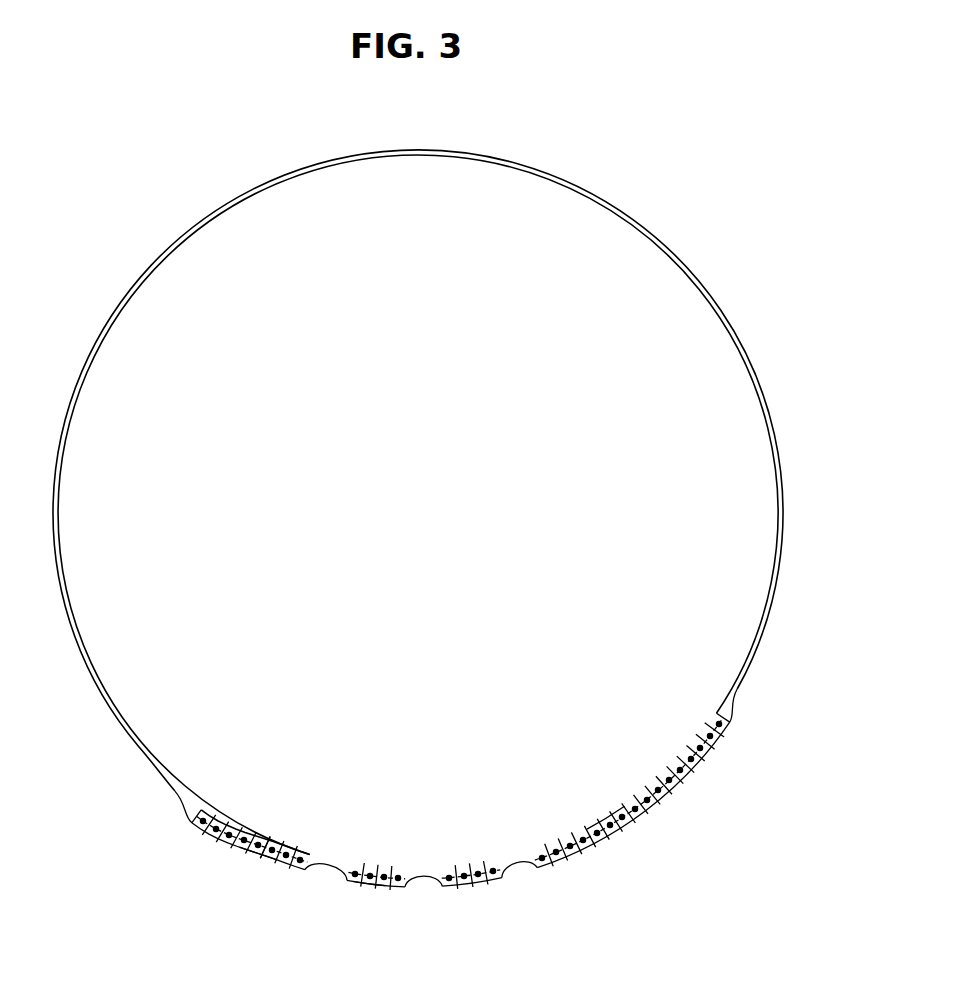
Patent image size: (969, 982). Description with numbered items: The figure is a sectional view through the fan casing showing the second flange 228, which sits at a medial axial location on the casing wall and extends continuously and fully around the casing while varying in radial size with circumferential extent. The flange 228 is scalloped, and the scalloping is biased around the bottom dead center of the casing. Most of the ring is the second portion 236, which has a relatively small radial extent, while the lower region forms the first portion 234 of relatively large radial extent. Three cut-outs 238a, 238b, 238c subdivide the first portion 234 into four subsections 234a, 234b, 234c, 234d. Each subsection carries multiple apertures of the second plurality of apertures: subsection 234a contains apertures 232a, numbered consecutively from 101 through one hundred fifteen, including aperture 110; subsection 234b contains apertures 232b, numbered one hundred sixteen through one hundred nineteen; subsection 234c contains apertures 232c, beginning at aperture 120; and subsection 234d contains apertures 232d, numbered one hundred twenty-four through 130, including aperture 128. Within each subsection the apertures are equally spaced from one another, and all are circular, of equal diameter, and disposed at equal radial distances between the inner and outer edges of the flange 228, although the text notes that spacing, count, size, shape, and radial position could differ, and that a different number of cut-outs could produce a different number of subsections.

The aperture number 101 is at (725, 719).
The aperture number 110 is at (631, 828).
The aperture number 120 is at (381, 890).
The aperture number 128 is at (258, 857).
The aperture number 130 is at (194, 820).
The second flange 228 is at (732, 716).
The apertures 232a is at (668, 786).
The apertures 232b is at (492, 882).
The apertures 232c is at (389, 874).
The apertures 232d is at (243, 844).
The first portion 234 is at (272, 866).
The subsection 234a is at (646, 800).
The subsection 234b is at (455, 866).
The subsection 234c is at (363, 864).
The subsection 234d is at (288, 858).
The second portion 236 is at (566, 180).
The cut-out 238a is at (522, 878).
The cut-out 238b is at (424, 882).
The cut-out 238c is at (320, 880).